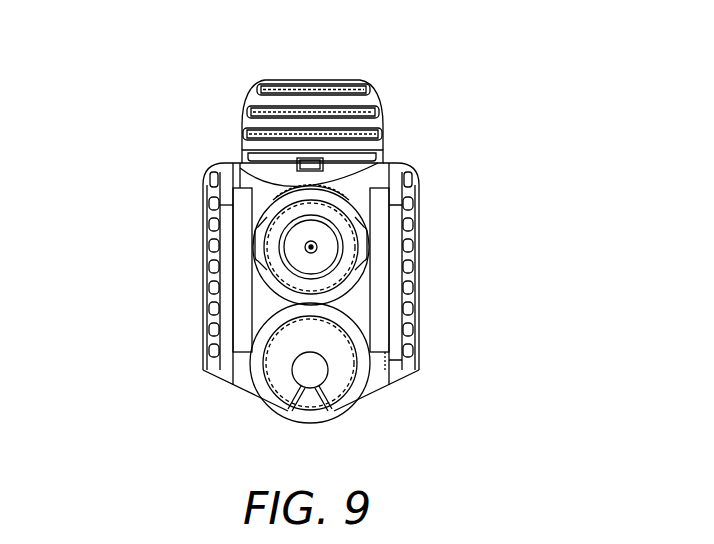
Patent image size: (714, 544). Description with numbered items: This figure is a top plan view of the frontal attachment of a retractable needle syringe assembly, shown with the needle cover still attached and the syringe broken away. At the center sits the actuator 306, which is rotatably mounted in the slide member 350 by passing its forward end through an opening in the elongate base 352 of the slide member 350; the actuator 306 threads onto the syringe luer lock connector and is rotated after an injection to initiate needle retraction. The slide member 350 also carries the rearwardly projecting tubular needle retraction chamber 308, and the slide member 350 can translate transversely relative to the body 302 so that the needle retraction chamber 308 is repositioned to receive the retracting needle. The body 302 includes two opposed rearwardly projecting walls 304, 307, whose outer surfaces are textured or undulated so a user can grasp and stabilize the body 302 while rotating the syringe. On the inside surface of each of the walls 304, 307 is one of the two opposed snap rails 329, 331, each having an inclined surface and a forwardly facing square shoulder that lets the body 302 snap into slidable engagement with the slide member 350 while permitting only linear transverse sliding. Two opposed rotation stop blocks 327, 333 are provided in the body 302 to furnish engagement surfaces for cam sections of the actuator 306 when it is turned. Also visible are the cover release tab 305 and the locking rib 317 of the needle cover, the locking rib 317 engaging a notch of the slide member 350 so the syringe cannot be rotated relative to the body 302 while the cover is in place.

The body 302 is at (203, 352).
The rearwardly projecting wall 304 is at (207, 210).
The cover release tab 305 is at (337, 87).
The actuator 306 is at (350, 207).
The rearwardly projecting wall 307 is at (415, 238).
The needle retraction chamber 308 is at (280, 390).
The locking rib 317 is at (237, 163).
The rotation stop block 327 is at (378, 283).
The snap rail 329 is at (380, 355).
The snap rail 331 is at (238, 320).
The rotation stop block 333 is at (223, 233).
The slide member 350 is at (263, 300).
The base 352 is at (353, 177).